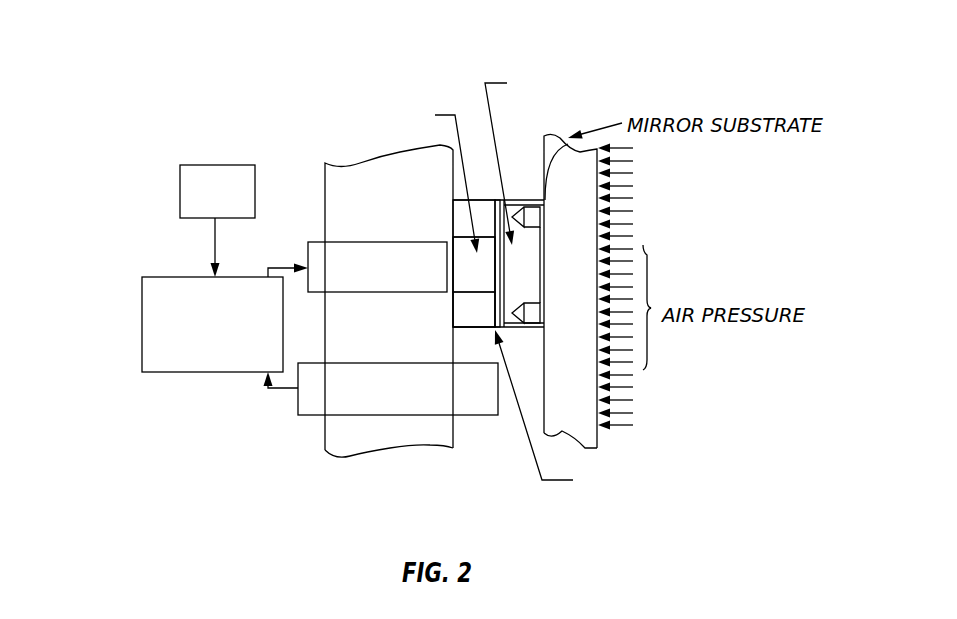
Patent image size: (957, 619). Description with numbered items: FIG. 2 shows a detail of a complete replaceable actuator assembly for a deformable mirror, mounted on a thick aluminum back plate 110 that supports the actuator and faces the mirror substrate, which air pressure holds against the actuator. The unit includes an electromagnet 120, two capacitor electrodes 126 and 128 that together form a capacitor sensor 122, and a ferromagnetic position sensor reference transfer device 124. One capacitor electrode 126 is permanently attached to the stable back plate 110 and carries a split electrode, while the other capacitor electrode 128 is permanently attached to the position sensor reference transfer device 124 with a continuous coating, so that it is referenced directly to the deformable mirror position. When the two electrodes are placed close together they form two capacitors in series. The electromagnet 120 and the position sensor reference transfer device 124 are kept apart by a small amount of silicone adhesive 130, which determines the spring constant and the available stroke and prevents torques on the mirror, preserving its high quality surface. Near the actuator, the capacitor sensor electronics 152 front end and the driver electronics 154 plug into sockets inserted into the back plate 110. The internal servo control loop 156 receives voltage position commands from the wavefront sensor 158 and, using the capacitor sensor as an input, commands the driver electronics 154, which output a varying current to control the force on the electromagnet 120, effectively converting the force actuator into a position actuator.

The back plate 110 is at (358, 312).
The electromagnet 120 is at (473, 198).
The capacitor sensor 122 is at (478, 322).
The position sensor reference transfer device 124 is at (608, 295).
The capacitor electrode 126 is at (460, 297).
The capacitor electrode 128 is at (495, 307).
The silicone adhesive 130 is at (498, 267).
The capacitor sensor electronics 152 is at (355, 399).
The driver electronics 154 is at (339, 259).
The internal servo control loop 156 is at (153, 330).
The wavefront sensor 158 is at (175, 189).